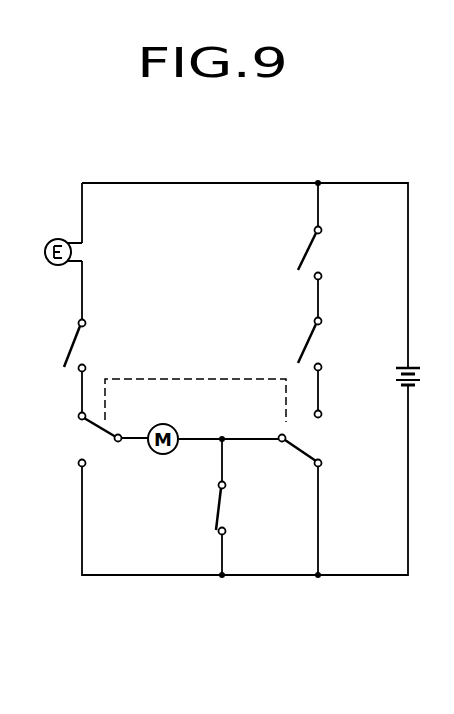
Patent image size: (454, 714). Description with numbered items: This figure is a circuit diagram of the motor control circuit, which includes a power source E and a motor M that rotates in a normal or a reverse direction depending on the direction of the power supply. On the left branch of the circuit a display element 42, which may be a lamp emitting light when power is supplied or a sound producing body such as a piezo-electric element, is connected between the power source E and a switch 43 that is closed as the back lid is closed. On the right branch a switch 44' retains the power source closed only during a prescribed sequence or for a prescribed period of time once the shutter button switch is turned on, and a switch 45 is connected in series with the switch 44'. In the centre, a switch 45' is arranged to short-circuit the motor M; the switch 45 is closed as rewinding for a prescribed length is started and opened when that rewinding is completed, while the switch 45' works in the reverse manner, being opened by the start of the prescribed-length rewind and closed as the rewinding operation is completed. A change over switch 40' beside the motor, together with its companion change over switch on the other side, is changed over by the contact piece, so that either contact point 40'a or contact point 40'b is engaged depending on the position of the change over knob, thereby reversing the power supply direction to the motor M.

The display element 42 is at (78, 250).
The switch 43 is at (85, 336).
The change over switch 40' is at (106, 453).
The contact point 40'a is at (60, 437).
The contact point 40'b is at (60, 487).
The switch 45' is at (243, 513).
The switch 44' is at (332, 253).
The switch 45 is at (328, 344).
The power source E is at (417, 377).